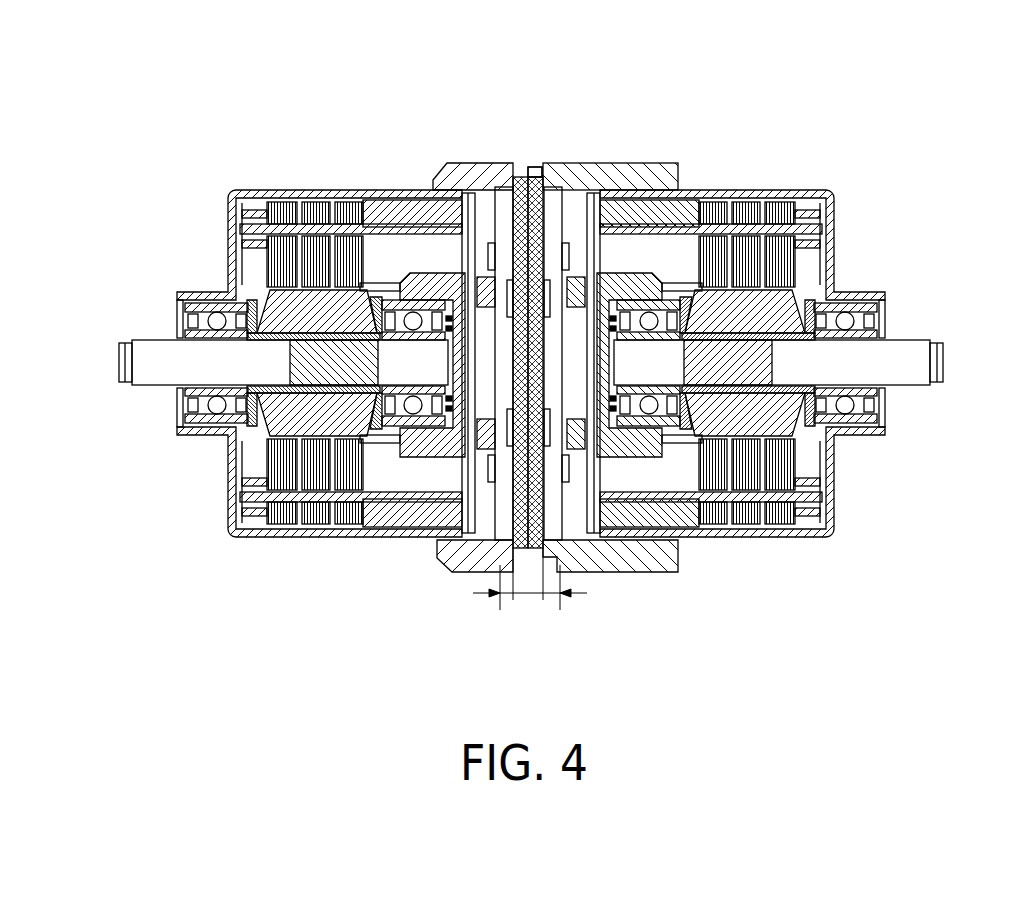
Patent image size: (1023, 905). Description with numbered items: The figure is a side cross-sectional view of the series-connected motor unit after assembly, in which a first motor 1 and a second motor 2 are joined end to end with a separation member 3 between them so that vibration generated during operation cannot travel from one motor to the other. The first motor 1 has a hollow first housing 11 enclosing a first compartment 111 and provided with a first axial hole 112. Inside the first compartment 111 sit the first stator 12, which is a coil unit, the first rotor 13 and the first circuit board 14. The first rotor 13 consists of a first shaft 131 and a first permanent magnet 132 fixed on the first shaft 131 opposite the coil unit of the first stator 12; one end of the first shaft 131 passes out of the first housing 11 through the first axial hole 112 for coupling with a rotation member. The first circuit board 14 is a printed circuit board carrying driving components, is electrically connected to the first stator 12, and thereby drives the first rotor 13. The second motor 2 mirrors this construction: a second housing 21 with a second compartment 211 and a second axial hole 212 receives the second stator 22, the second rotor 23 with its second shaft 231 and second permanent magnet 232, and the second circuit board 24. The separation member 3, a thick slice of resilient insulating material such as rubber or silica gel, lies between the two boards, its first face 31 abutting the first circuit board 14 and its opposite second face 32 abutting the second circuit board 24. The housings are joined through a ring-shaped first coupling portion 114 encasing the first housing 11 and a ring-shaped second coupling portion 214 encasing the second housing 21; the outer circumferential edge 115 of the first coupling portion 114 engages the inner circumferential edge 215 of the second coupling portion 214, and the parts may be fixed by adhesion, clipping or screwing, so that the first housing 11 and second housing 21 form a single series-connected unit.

The first motor 1 is at (162, 172).
The first housing 11 is at (327, 190).
The first compartment 111 is at (510, 190).
The first axial hole 112 is at (178, 398).
The first coupling portion 114 is at (457, 560).
The outer circumferential edge 115 is at (540, 178).
The first stator 12 is at (327, 520).
The first rotor 13 is at (283, 478).
The first shaft 131 is at (225, 368).
The first permanent magnet 132 is at (295, 423).
The first circuit board 14 is at (493, 300).
The second motor 2 is at (882, 174).
The second housing 21 is at (730, 192).
The second compartment 211 is at (548, 185).
The second axial hole 212 is at (880, 400).
The second coupling portion 214 is at (628, 557).
The inner circumferential edge 215 is at (547, 102).
The second stator 22 is at (768, 480).
The second rotor 23 is at (817, 409).
The second shaft 231 is at (847, 380).
The second permanent magnet 232 is at (767, 428).
The second circuit board 24 is at (563, 287).
The separation member 3 is at (530, 440).
The first face 31 is at (509, 415).
The second face 32 is at (549, 414).